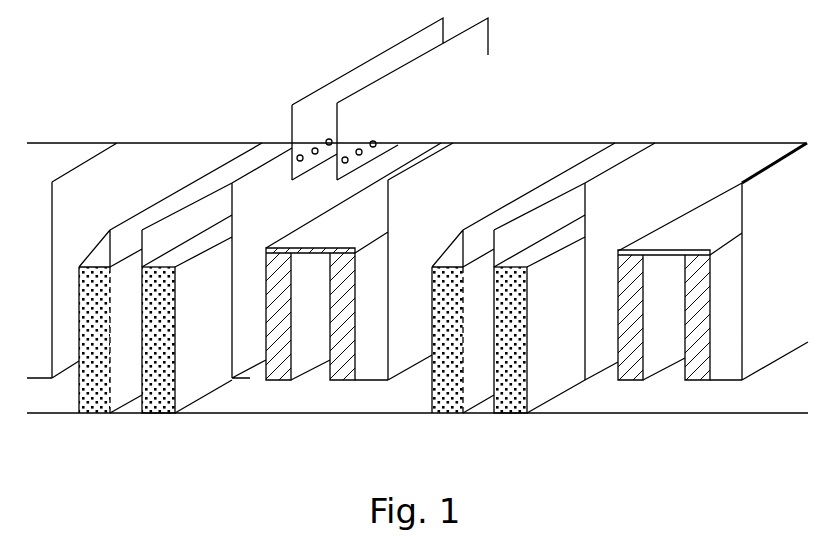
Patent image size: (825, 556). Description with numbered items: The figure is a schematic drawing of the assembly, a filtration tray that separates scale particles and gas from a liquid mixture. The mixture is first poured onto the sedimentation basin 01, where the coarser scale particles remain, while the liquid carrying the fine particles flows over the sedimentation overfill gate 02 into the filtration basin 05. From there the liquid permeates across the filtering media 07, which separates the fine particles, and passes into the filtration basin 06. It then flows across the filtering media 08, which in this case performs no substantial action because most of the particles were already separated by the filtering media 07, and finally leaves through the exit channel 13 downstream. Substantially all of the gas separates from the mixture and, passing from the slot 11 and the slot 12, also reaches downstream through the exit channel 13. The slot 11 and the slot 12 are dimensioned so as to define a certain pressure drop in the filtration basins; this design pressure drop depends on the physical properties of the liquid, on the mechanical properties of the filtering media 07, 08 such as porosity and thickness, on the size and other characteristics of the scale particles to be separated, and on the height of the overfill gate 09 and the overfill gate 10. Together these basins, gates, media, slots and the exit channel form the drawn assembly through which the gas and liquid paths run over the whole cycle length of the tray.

The sedimentation basin 1 01 is at (417, 263).
The sedimentation overfill gate 1 02 is at (424, 82).
The filtration basin 1 05 is at (201, 278).
The filtration basin 2 06 is at (359, 268).
The filtering media 1 07 is at (347, 366).
The filtering media 2 08 is at (448, 409).
The overfill gate 1 09 is at (395, 344).
The overfill gate 2 10 is at (485, 344).
The slot 1 11 is at (397, 144).
The slot 2 12 is at (552, 144).
The exit channel 13 is at (133, 408).